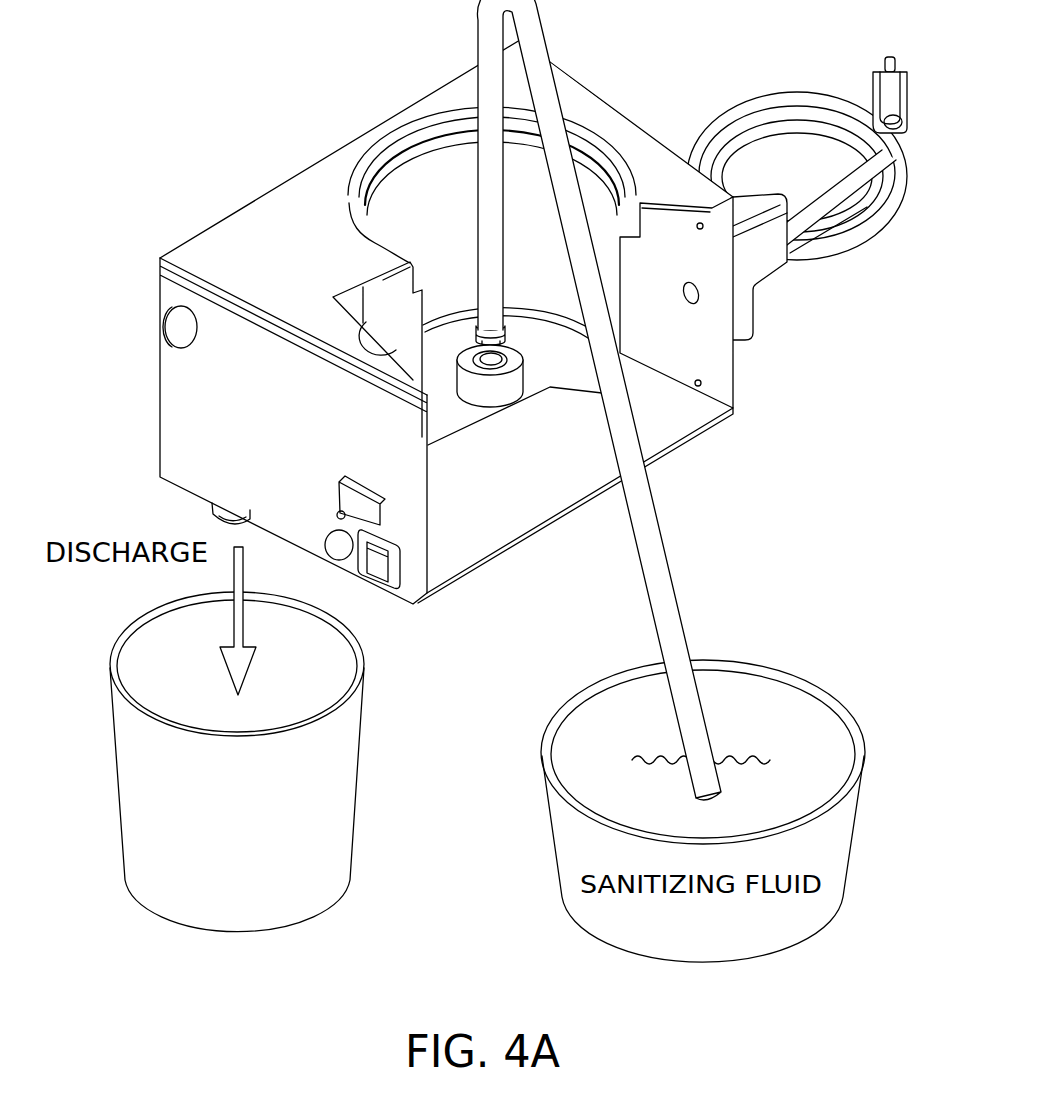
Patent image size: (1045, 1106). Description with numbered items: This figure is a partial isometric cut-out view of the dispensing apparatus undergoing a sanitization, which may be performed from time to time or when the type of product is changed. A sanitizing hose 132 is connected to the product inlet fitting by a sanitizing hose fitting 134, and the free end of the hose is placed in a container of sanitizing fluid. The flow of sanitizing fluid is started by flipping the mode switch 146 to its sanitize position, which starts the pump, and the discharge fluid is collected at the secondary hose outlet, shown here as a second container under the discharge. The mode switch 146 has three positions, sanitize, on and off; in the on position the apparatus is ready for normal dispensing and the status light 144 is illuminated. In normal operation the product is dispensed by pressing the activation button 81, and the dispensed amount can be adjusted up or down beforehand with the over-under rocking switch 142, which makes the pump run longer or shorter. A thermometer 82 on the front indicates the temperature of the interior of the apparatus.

The thermometer 82 is at (170, 327).
The over-under rocking switch 142 is at (362, 484).
The status light 144 is at (338, 512).
The activation button 81 is at (338, 560).
The mode switch 146 is at (388, 587).
The sanitizing hose fitting 134 is at (495, 385).
The sanitizing hose 132 is at (668, 552).